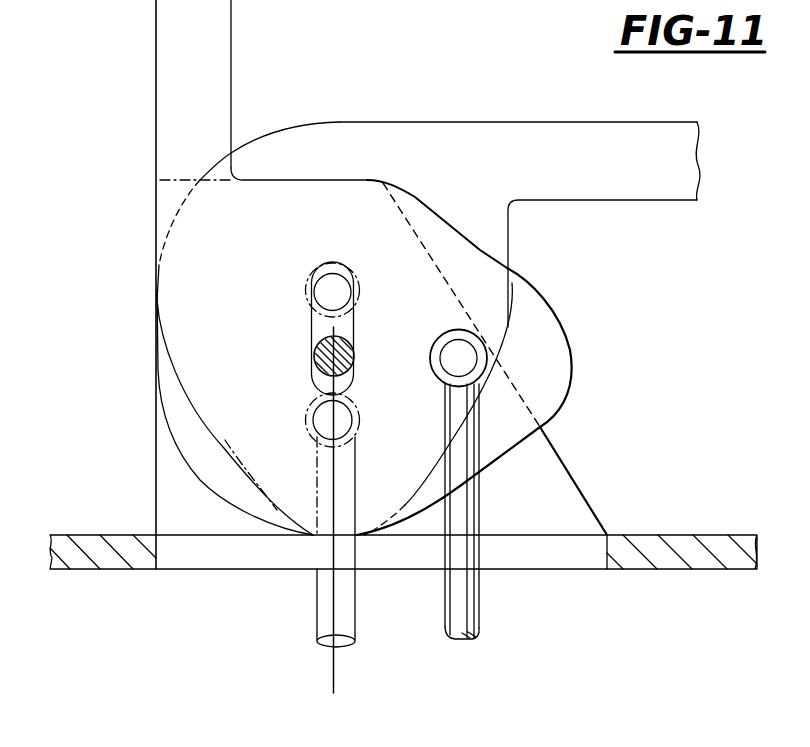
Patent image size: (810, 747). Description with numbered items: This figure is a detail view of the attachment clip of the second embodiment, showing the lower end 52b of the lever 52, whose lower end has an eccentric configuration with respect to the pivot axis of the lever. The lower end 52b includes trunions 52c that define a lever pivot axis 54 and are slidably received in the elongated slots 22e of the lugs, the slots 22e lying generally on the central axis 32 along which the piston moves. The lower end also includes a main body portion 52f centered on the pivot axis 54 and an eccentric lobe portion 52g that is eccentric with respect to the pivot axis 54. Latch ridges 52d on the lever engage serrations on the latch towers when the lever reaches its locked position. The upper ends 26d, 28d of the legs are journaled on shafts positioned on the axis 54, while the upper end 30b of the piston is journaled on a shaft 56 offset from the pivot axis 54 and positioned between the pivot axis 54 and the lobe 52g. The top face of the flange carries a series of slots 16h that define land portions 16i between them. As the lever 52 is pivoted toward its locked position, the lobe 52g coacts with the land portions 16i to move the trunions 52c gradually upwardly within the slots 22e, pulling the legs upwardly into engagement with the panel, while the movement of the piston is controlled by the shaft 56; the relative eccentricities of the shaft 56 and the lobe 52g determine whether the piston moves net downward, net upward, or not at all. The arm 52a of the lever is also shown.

The land portions 16i is at (186, 534).
The slots 16h is at (607, 555).
The lever 52 is at (118, 153).
The bracket arm 52a is at (154, 27).
The lower end of lever 52b is at (510, 232).
The trunions 52c is at (318, 352).
The latch ridges 52d is at (277, 510).
The main body portion 52f is at (172, 328).
The lobe portion 52g is at (572, 388).
The elongated slots 22e is at (315, 388).
The lever pivot axis 54 is at (360, 355).
The upper end of leg 26d is at (195, 405).
The upper end of leg 28d is at (306, 433).
The central axis 32 is at (335, 660).
The shaft 56 is at (466, 353).
The upper end of piston 30b is at (477, 452).